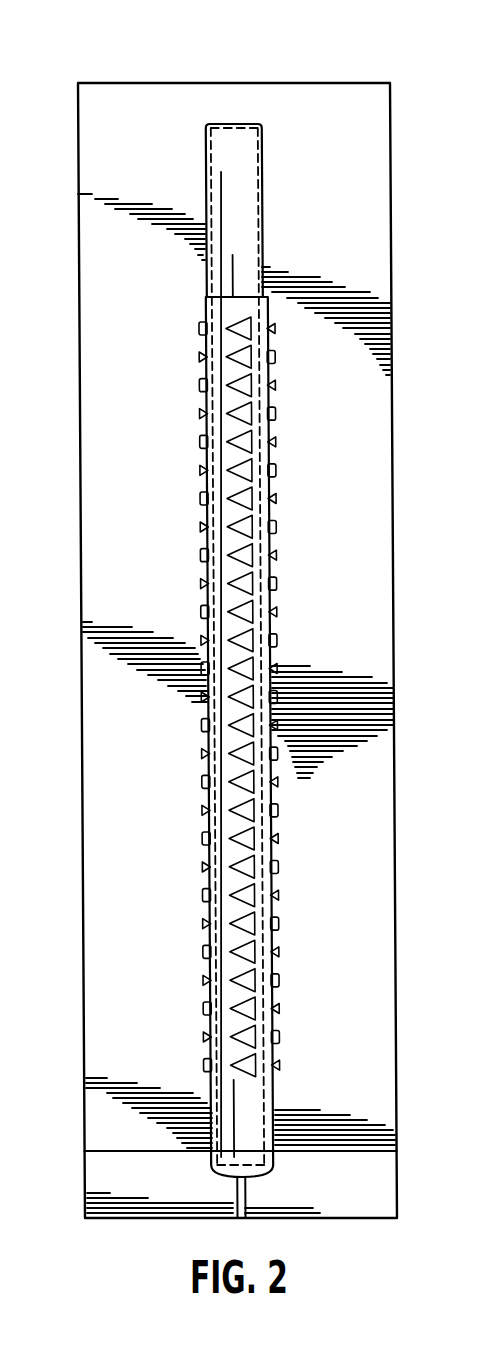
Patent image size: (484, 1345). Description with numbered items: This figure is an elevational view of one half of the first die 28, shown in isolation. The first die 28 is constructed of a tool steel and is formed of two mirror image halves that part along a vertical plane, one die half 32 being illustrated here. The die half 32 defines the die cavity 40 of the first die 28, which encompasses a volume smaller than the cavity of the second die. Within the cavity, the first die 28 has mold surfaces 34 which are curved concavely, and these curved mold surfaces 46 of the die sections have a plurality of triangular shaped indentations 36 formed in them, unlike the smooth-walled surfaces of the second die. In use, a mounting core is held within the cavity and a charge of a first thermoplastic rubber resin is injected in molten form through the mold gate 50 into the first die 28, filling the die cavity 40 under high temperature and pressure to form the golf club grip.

The first die 28 is at (286, 50).
The die half 32 is at (373, 229).
The mold surfaces 34 is at (210, 369).
The triangular shaped indentations 36 is at (245, 337).
The die cavity 40 is at (210, 1097).
The curved mold surfaces 46 is at (258, 513).
The mold gate 50 is at (234, 1192).